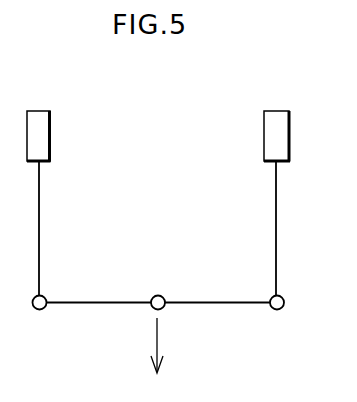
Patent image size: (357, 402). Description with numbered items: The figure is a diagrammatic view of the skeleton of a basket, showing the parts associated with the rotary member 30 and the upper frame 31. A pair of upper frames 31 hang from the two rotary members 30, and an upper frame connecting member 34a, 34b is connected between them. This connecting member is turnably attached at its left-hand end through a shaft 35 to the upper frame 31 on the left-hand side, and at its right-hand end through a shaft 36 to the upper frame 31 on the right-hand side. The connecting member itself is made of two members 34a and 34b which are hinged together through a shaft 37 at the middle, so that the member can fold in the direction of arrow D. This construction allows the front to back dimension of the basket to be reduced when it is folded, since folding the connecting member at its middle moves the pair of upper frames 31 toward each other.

The rotary member 30 is at (40, 136).
The upper frame 31 is at (40, 228).
The upper frame connecting member 34a is at (112, 310).
The upper frame connecting member 34b is at (240, 310).
The shaft 35 is at (38, 310).
The shaft 36 is at (281, 310).
The shaft 37 is at (157, 295).
The arrow D is at (158, 335).